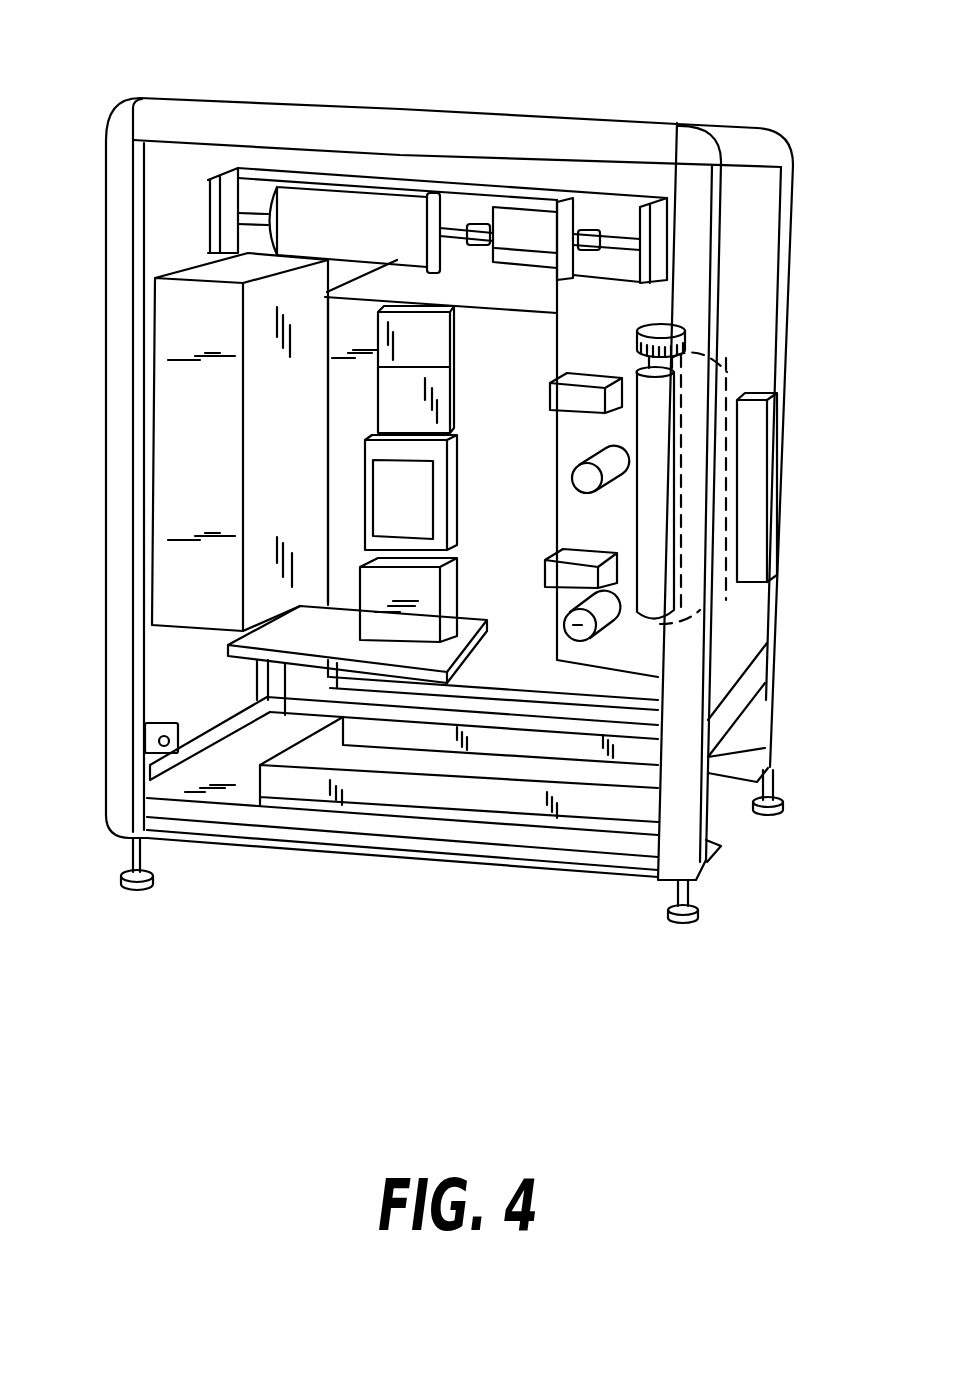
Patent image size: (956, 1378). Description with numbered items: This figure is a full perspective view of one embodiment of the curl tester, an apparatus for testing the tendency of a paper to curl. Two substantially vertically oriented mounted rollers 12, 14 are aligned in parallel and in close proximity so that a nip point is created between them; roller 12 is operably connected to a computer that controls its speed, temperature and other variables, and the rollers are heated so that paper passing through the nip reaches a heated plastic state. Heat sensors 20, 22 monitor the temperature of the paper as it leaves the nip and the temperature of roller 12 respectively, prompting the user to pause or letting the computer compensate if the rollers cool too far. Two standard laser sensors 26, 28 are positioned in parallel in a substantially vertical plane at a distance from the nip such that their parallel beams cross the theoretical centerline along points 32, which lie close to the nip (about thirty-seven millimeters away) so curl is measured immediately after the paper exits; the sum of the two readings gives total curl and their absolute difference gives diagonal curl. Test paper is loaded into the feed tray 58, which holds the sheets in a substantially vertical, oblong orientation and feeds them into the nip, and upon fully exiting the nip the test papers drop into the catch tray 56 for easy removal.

The roller 12 is at (653, 623).
The roller 14 is at (702, 530).
The heat sensor 20 is at (575, 472).
The heat sensor 22 is at (553, 640).
The laser sensor 26 is at (552, 390).
The laser sensor 28 is at (553, 547).
The points 32 is at (362, 203).
The catch tray 56 is at (468, 803).
The feed tray 58 is at (753, 427).